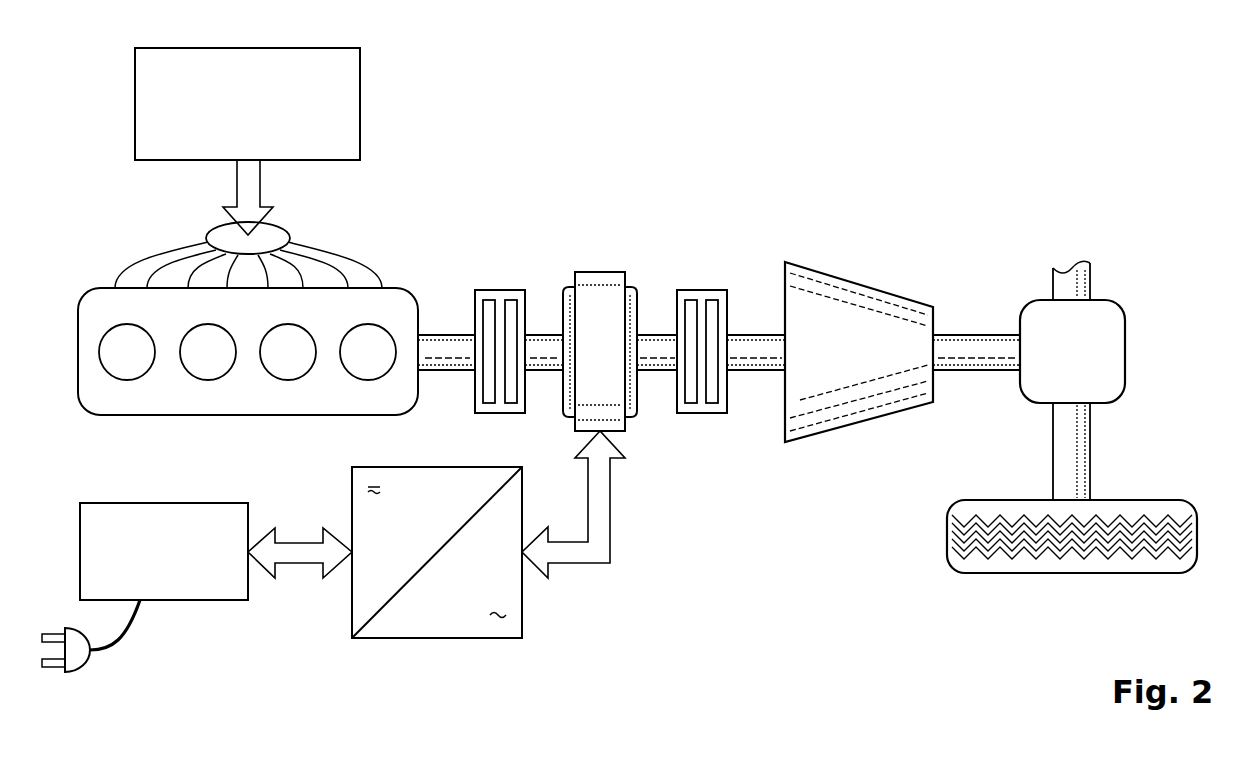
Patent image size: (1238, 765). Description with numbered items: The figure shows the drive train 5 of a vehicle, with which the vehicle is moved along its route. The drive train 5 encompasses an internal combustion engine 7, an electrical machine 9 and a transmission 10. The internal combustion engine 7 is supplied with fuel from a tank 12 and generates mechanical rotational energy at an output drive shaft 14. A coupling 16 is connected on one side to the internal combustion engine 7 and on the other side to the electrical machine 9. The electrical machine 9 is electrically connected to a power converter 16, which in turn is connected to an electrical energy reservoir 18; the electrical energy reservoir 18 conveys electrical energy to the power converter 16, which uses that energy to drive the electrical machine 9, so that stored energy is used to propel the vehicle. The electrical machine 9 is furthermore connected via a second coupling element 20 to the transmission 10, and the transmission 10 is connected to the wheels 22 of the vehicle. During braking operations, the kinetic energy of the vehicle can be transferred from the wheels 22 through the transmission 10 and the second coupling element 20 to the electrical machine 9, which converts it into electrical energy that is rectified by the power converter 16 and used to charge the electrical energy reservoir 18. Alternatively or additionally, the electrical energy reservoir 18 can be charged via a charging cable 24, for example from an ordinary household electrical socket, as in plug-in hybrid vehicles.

The drive train 5 is at (797, 153).
The internal combustion engine 7 is at (152, 415).
The electrical machine 9 is at (600, 272).
The transmission 10 is at (857, 283).
The tank 12 is at (361, 104).
The output drive shaft 14 is at (445, 335).
The coupling 16 is at (498, 290).
The electrical energy reservoir 18 is at (220, 600).
The second coupling element 20 is at (700, 290).
The wheels 22 is at (1160, 500).
The charging cable 24 is at (82, 676).